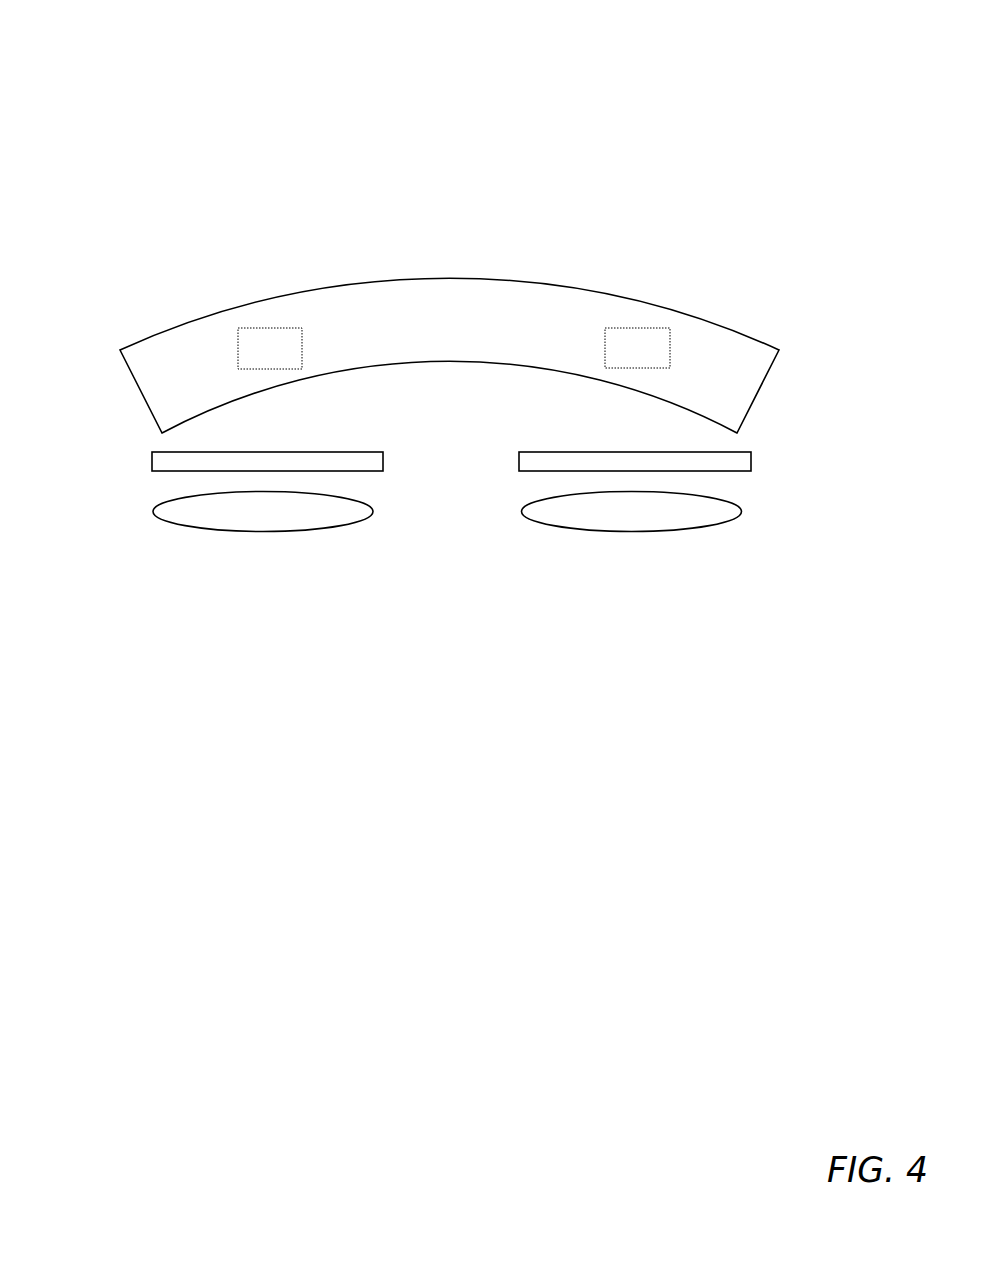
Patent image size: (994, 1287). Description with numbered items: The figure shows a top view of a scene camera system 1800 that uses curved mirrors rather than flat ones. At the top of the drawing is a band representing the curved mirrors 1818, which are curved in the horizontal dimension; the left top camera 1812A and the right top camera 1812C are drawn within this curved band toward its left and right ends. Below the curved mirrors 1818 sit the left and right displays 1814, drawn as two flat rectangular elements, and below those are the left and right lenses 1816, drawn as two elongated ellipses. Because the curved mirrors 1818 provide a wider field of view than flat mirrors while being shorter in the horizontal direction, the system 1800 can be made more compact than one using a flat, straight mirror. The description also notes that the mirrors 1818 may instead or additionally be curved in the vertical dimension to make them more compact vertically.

The system 1800 is at (145, 73).
The curved mirrors 1818 is at (480, 337).
The left top camera 1812A is at (295, 361).
The right top camera 1812C is at (662, 360).
The displays 1814 is at (451, 451).
The lenses 1816 is at (447, 512).